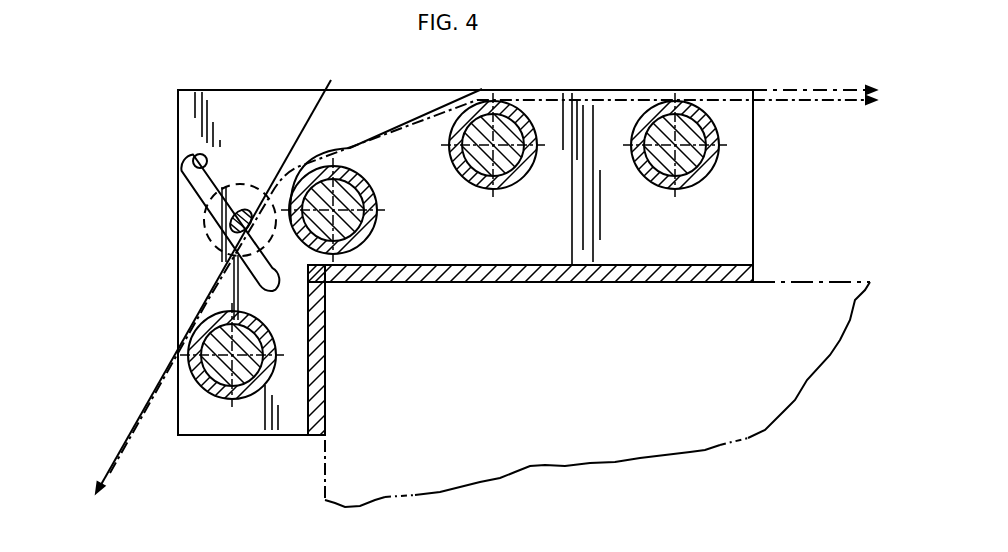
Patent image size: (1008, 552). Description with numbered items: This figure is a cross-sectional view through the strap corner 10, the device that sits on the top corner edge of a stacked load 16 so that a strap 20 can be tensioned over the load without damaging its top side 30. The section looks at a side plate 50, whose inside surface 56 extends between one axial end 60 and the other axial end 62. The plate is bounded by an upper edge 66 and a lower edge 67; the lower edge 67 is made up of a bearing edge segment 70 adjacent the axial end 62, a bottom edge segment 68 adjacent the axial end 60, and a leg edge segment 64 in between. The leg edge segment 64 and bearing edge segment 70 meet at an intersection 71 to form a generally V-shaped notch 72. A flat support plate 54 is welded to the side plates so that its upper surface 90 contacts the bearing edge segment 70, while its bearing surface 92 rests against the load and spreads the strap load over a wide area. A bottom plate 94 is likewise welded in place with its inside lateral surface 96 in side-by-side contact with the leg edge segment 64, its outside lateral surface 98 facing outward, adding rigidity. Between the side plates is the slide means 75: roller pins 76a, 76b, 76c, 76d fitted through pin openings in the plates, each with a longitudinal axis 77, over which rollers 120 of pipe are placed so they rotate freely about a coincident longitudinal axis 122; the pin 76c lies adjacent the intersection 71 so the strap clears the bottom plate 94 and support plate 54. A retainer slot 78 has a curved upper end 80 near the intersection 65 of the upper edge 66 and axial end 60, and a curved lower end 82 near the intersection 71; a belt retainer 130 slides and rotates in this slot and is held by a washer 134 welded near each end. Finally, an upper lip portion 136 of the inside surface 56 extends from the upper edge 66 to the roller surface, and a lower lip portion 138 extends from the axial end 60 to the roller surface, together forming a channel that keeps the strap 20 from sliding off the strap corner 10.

The strap corner 10 is at (660, 65).
The stacked load 16 is at (820, 278).
The strap 20 is at (813, 90).
The top side 30 is at (853, 280).
The side plate 50 is at (289, 93).
The support plate 54 is at (553, 284).
The inside surface 56 is at (252, 117).
The axial end 60 is at (178, 123).
The axial end 62 is at (753, 143).
The leg edge segment 64 is at (325, 340).
The intersection 65 is at (178, 90).
The upper edge 66 is at (378, 90).
The lower edge 67 is at (469, 284).
The bottom edge segment 68 is at (247, 437).
The bearing edge segment 70 is at (625, 272).
The intersection 71 is at (320, 281).
The V-shaped notch 72 is at (330, 287).
The slide means 75 is at (546, 181).
The roller pin 76a is at (690, 120).
The roller pin 76b is at (522, 190).
The roller pin 76c is at (360, 215).
The roller pin 76d is at (195, 352).
The longitudinal axis 77 is at (356, 172).
The retainer slot 78 is at (189, 183).
The upper end 80 is at (196, 165).
The lower end 82 is at (241, 270).
The upper surface 90 is at (723, 264).
The bearing surface 92 is at (673, 284).
The bottom plate 94 is at (334, 412).
The inside lateral surface 96 is at (308, 425).
The outside lateral surface 98 is at (325, 373).
The roller 120 is at (713, 152).
The longitudinal axis 122 is at (493, 284).
The belt retainer 130 is at (225, 222).
The washer 134 is at (337, 64).
The upper lip portion 136 is at (497, 95).
The lower lip portion 138 is at (178, 333).